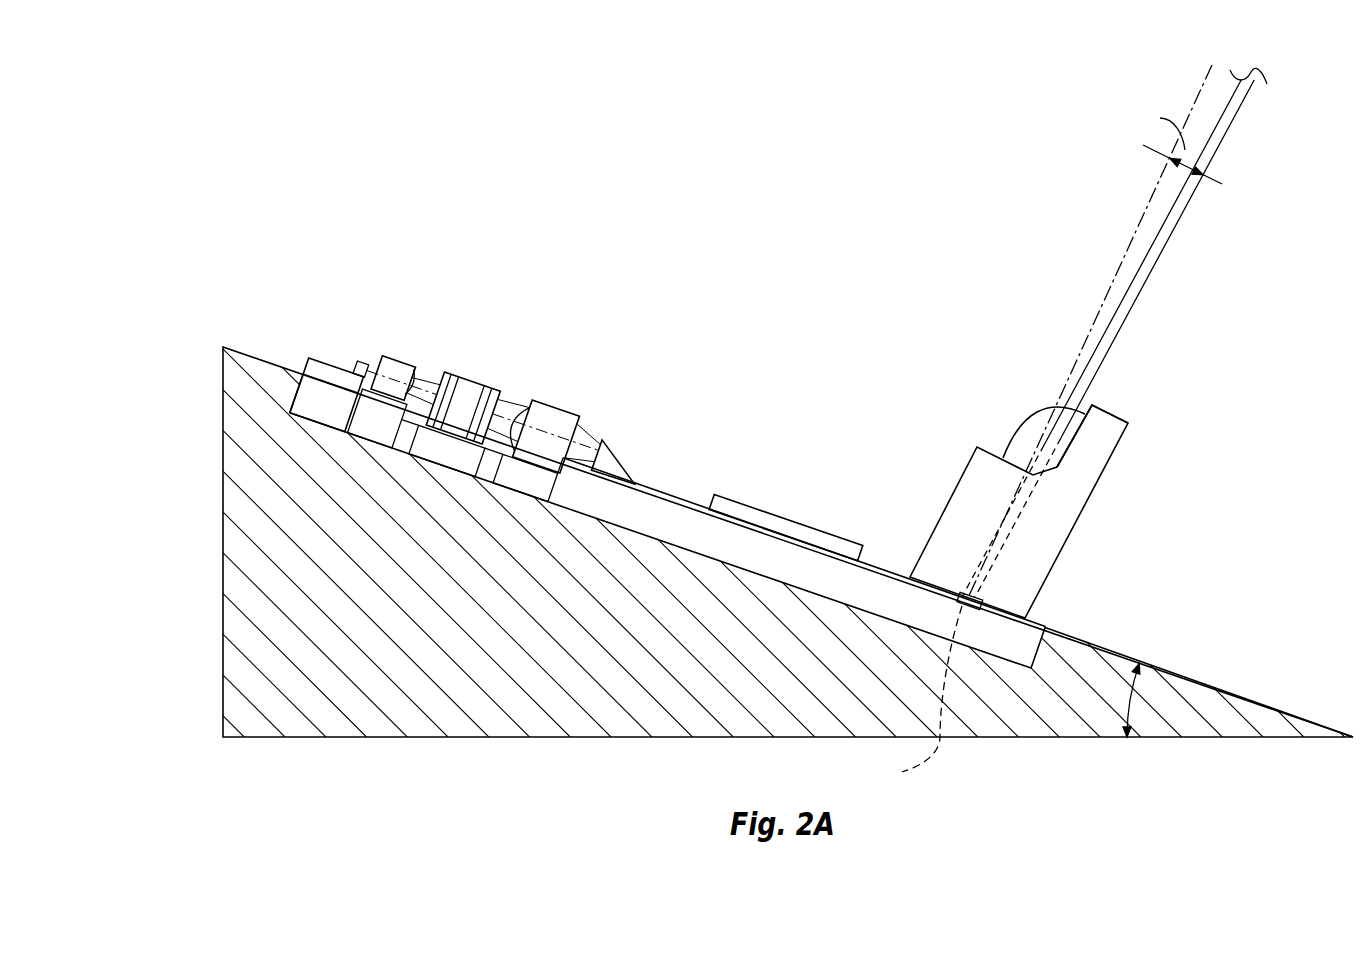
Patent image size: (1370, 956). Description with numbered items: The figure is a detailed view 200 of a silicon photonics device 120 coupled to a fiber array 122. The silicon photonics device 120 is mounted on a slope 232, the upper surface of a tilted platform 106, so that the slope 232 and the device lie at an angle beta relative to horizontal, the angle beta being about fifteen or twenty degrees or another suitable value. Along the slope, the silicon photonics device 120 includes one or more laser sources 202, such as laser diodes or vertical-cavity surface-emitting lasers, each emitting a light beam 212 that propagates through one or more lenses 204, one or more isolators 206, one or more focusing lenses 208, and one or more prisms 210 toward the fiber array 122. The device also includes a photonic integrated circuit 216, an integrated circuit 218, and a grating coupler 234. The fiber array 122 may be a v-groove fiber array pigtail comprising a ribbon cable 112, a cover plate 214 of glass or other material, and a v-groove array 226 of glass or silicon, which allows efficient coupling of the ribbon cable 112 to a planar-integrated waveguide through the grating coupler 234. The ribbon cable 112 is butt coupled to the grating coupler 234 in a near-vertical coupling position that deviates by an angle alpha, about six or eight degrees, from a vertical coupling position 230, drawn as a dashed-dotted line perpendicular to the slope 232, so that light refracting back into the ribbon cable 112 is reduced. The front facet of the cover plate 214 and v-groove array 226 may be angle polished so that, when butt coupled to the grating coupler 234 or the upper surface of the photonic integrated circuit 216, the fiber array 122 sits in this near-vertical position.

The detailed view 200 is at (218, 158).
The tilted platform 106 is at (222, 500).
The silicon photonics device 120 is at (742, 316).
The fiber array 122 is at (1035, 372).
The laser sources 202 is at (363, 366).
The lenses 204 is at (401, 369).
The light beam 212 is at (423, 388).
The isolators 206 is at (484, 380).
The focusing lenses 208 is at (548, 411).
The prisms 210 is at (610, 438).
The photonic integrated circuit (PIC) 216 is at (632, 503).
The integrated circuit (IC) 218 is at (757, 512).
The cover plate 214 is at (950, 490).
The v-groove array 226 is at (1120, 445).
The ribbon cable 112 is at (1125, 312).
The vertical coupling position 230 is at (1208, 76).
The slope 232 is at (1117, 652).
The grating coupler 234 is at (913, 696).